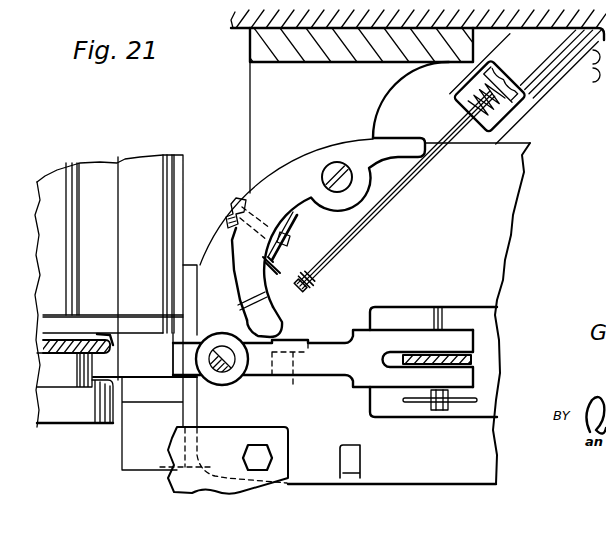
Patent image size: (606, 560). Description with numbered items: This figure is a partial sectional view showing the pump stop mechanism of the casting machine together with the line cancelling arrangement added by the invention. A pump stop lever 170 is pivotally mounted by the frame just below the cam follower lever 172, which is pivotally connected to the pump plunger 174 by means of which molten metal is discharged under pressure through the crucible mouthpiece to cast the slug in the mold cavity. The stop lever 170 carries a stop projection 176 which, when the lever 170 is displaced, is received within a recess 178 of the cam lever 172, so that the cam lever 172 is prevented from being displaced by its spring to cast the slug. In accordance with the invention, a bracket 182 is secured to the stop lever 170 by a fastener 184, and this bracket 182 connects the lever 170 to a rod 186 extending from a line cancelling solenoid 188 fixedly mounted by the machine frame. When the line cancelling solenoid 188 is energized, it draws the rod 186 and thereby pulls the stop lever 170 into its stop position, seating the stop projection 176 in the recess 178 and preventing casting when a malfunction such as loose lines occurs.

The pump stop lever 170 is at (292, 171).
The cam follower lever 172 is at (323, 358).
The pump plunger 174 is at (455, 353).
The stop projection 176 is at (281, 324).
The recess 178 is at (288, 377).
The bracket 182 is at (268, 267).
The fastener 184 is at (235, 199).
The rod 186 is at (386, 208).
The line cancelling solenoid 188 is at (530, 73).